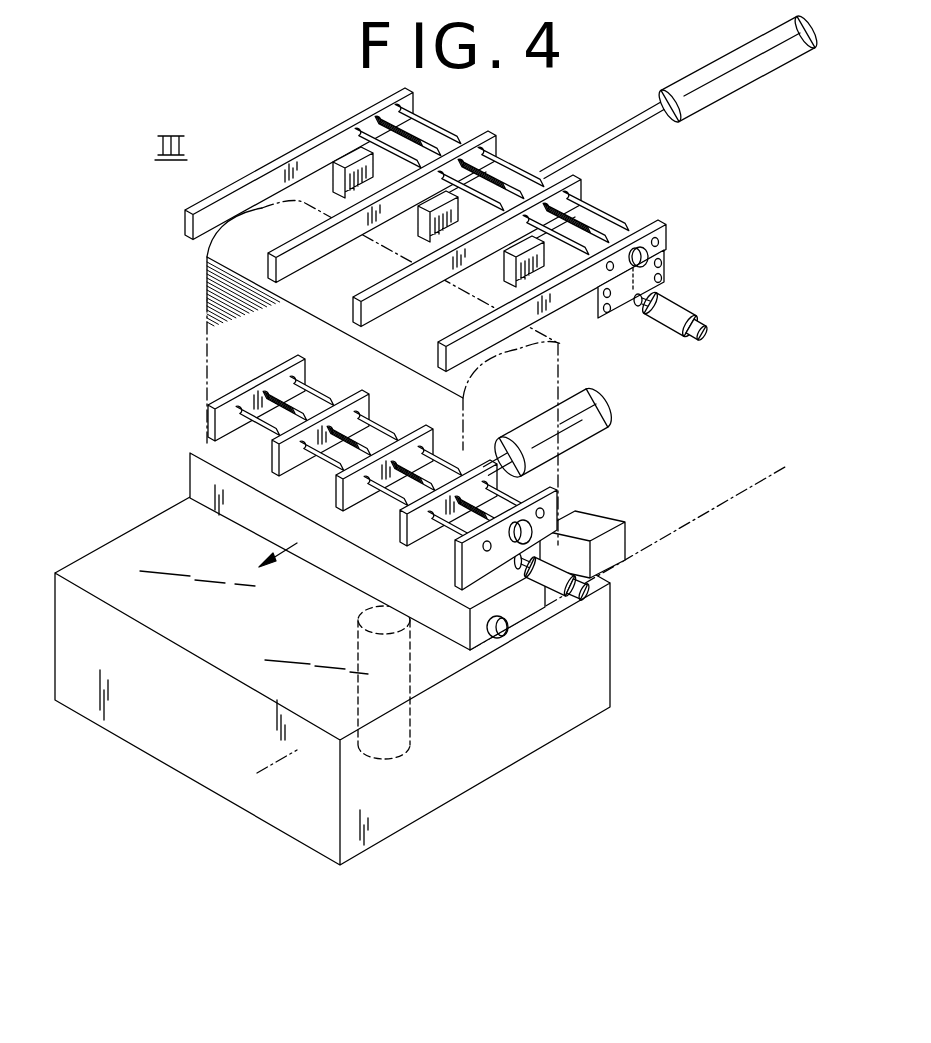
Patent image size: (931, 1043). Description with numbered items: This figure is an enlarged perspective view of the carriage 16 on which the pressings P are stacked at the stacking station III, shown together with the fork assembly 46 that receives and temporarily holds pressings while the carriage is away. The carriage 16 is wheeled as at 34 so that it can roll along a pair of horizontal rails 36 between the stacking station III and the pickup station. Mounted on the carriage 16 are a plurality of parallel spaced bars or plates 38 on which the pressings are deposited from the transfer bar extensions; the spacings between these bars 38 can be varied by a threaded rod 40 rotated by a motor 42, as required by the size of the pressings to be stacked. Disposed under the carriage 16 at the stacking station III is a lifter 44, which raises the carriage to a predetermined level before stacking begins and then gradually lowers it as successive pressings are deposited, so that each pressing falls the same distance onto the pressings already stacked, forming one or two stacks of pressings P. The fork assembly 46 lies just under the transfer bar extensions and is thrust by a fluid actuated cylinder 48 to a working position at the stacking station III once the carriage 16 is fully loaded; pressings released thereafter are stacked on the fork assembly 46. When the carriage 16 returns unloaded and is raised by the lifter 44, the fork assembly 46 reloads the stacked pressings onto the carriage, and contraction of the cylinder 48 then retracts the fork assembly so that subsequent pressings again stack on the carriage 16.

The carriage 16 is at (343, 577).
The wheels 34 is at (588, 586).
The horizontal rails 36 is at (676, 535).
The parallel spaced bars or plates 38 is at (409, 462).
The threaded rod 40 is at (278, 392).
The motor 42 is at (548, 594).
The lifter 44 is at (410, 708).
The fork assembly 46 is at (311, 140).
The fluid actuated cylinder 48 is at (690, 82).
The pressings P is at (212, 348).
The stacking station III is at (488, 192).